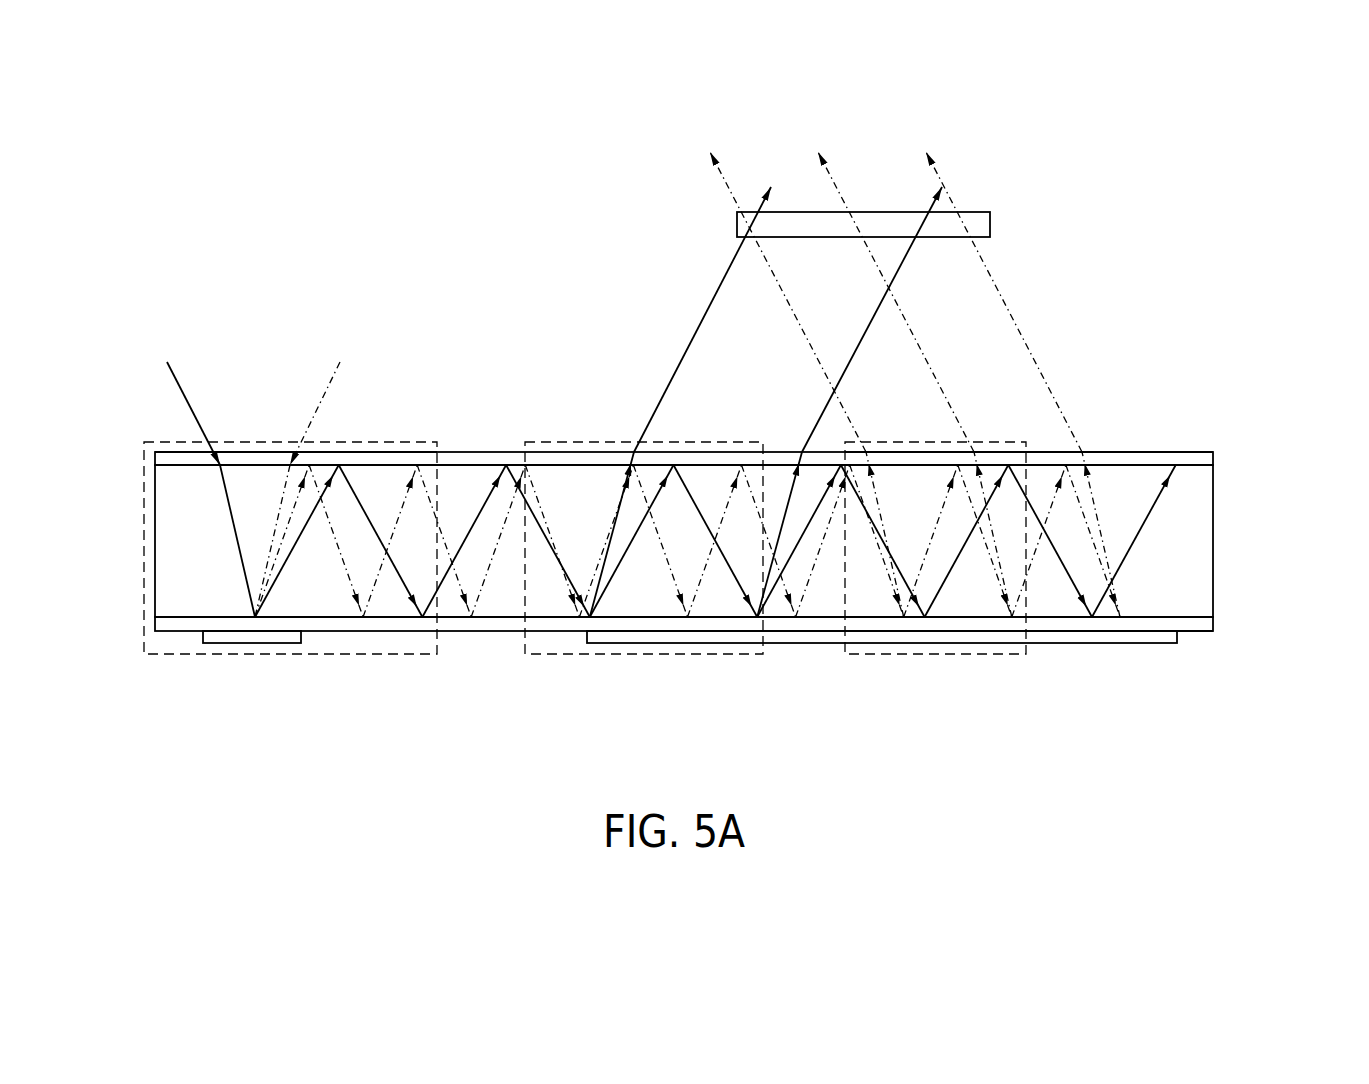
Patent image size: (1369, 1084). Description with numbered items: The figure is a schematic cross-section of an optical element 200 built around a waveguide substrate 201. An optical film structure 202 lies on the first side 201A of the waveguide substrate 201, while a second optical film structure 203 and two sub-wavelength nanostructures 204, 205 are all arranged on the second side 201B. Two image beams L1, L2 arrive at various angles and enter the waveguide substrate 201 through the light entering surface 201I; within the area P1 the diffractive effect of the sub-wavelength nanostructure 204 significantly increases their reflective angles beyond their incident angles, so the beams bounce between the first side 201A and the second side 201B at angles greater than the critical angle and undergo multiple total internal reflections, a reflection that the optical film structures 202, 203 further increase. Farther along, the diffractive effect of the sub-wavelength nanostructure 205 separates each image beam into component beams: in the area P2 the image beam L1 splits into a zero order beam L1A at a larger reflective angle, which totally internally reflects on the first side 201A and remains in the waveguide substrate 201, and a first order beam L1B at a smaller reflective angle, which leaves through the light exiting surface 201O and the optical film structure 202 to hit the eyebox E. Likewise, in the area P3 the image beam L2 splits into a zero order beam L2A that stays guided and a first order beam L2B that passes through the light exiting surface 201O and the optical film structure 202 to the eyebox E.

The optical element 200 is at (1186, 289).
The waveguide substrate 201 is at (173, 540).
The optical film structure 202 is at (173, 458).
The optical film structure 203 is at (173, 623).
The sub-wavelength nanostructure 204 is at (256, 643).
The sub-wavelength nanostructure 205 is at (1120, 643).
The first side 201A is at (1143, 453).
The second side 201B is at (1193, 618).
The light entering surface 201I is at (252, 443).
The light exiting surface 201O is at (927, 443).
The eyebox E is at (992, 224).
The image beam L1 is at (202, 472).
The zero order beam L1A is at (616, 574).
The first order beam L1B is at (617, 508).
The image beam L2 is at (304, 472).
The zero order beam L2A is at (934, 548).
The first order beam L2B is at (885, 502).
The area P1 is at (367, 655).
The area P2 is at (695, 655).
The area P3 is at (865, 655).